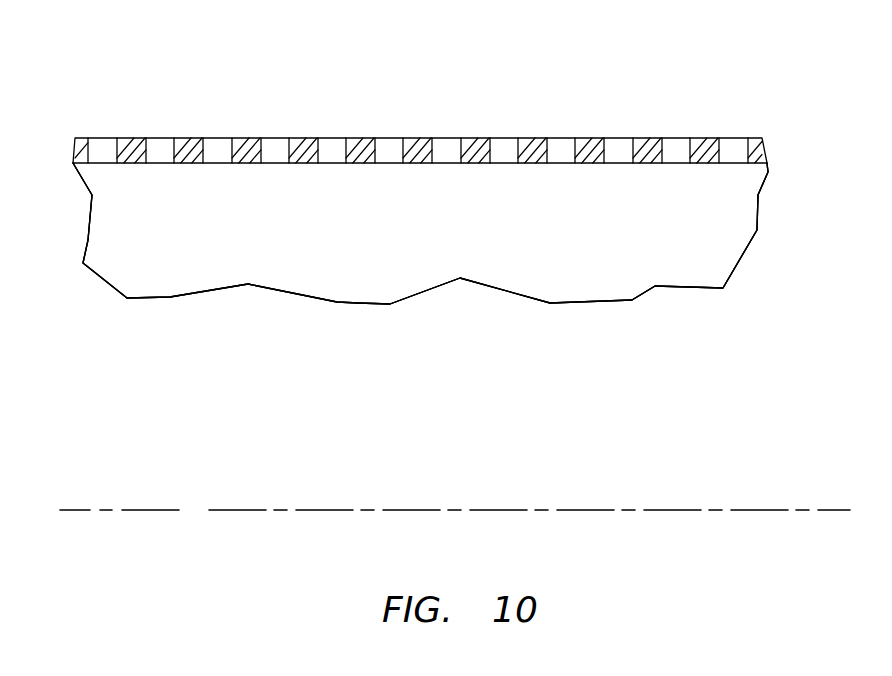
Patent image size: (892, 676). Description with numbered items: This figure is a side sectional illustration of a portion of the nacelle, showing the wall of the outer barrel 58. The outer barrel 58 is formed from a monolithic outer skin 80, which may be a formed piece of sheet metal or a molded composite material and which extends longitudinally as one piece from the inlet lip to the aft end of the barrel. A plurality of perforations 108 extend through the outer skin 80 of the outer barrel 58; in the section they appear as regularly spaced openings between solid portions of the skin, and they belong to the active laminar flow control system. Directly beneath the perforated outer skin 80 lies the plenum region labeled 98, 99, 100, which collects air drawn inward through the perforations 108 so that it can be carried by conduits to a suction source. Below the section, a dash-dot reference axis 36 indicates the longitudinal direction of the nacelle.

The longitudinal axis 36 is at (197, 510).
The outer barrel 58 is at (719, 115).
The monolithic outer skin 80 is at (767, 148).
The plenum 98 is at (463, 238).
The plenum 99 is at (420, 233).
The plenum 100 is at (420, 233).
The perforations 108 is at (218, 147).